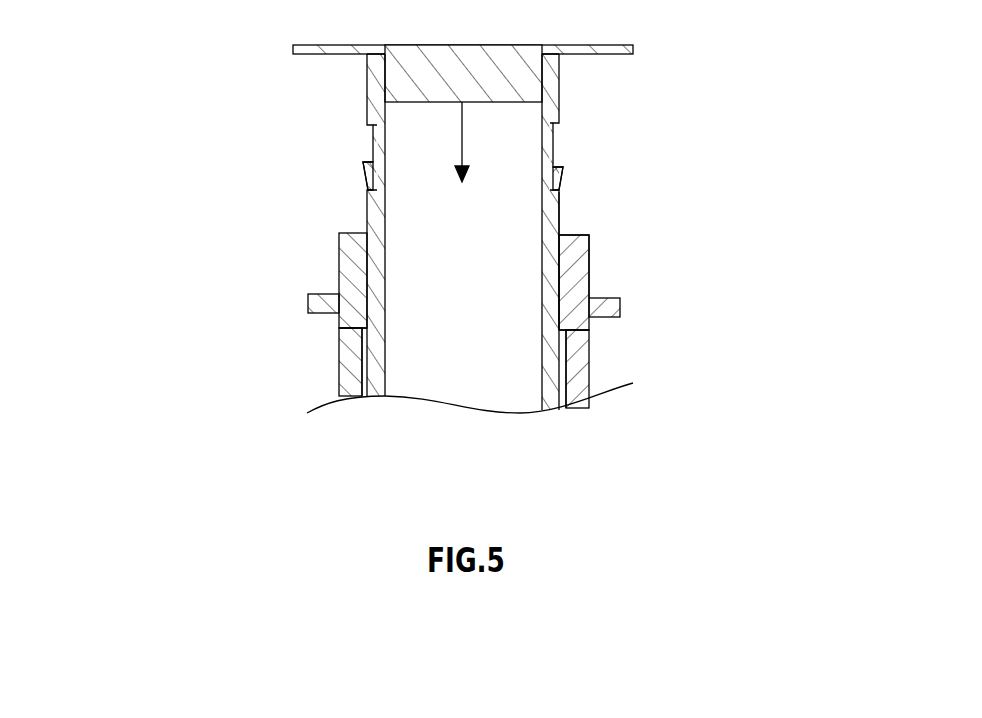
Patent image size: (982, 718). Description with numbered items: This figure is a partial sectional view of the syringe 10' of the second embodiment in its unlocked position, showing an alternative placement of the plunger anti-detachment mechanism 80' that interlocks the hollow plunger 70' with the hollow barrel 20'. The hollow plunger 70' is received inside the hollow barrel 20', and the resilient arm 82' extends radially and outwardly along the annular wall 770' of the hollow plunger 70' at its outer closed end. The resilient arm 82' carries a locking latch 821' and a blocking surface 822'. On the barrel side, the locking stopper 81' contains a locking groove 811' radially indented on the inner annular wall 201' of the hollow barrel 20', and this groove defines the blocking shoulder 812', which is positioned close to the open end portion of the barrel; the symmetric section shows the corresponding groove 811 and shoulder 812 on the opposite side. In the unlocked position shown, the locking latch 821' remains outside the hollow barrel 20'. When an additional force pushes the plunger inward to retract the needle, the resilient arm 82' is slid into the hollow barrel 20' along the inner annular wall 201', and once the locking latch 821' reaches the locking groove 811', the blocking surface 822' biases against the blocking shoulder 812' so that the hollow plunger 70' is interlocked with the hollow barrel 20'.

The syringe 10' is at (343, 231).
The hollow plunger 70' is at (470, 52).
The resilient arm 82' is at (572, 230).
The blocking surface 822' is at (443, 128).
The locking latch 821' is at (494, 178).
The annular wall 770' is at (651, 230).
The plunger anti-detachment mechanism 80' is at (617, 258).
The hollow barrel 20' is at (635, 274).
The inner annular wall 201' is at (525, 352).
The flange 812 is at (272, 315).
The blocking shoulder 812' is at (665, 335).
The locking stopper 81' is at (584, 358).
The threaded portion 811 is at (286, 367).
The locking groove 811' is at (651, 377).